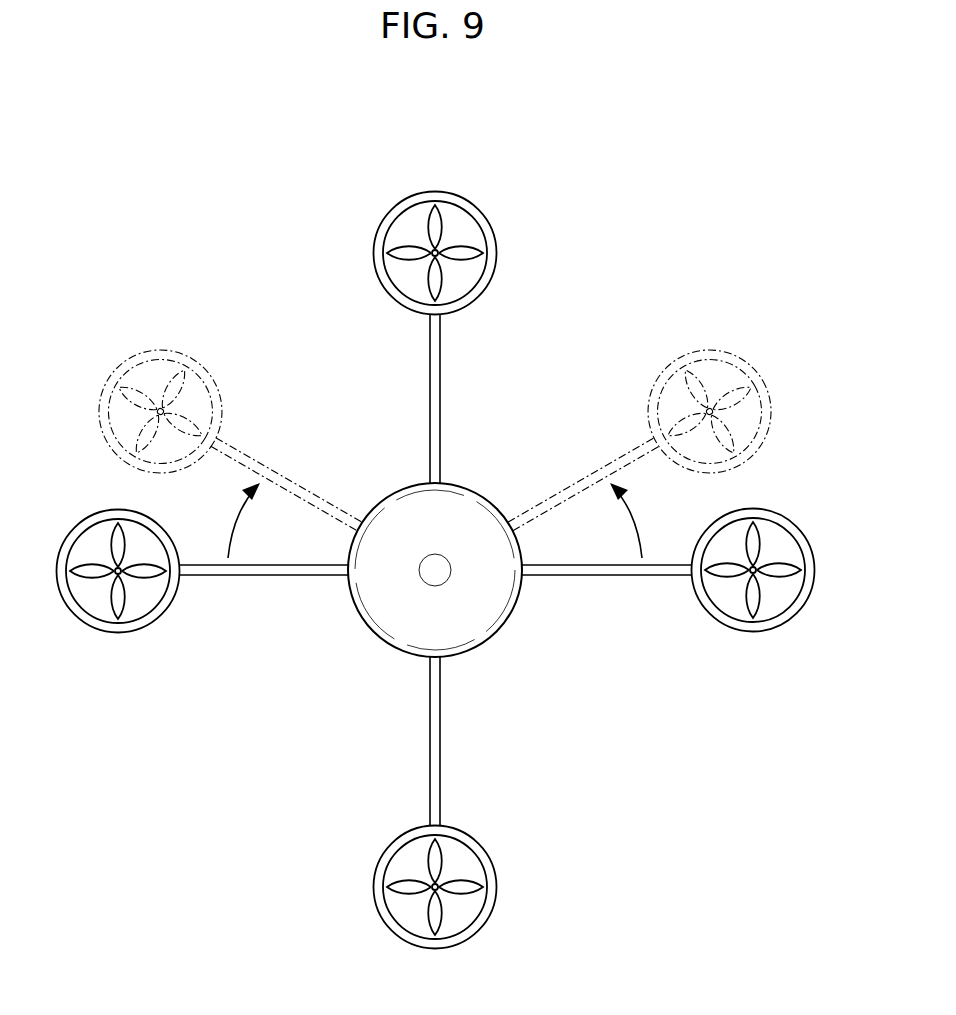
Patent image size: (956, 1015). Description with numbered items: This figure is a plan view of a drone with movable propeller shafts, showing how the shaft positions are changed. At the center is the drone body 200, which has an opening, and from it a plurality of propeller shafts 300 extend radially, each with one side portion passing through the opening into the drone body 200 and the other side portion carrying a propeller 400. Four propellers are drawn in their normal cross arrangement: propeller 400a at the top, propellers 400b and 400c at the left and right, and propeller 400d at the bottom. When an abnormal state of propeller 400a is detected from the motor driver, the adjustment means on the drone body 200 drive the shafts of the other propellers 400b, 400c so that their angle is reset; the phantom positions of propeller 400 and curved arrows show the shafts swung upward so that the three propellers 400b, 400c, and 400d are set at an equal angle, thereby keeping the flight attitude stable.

The drone body 200 is at (383, 638).
The propeller shaft 300 is at (253, 578).
The propeller 400 is at (172, 378).
The propeller 400a is at (454, 222).
The propeller 400b is at (118, 597).
The propeller 400c is at (753, 598).
The propeller 400d is at (467, 878).